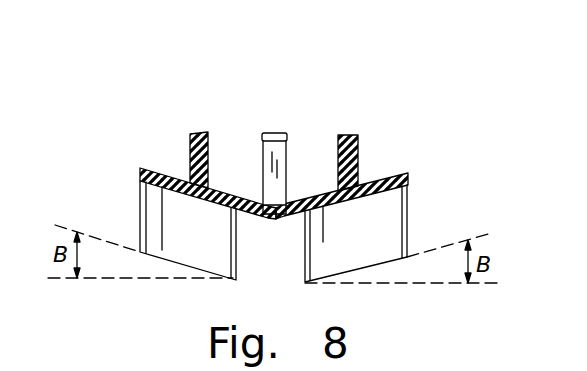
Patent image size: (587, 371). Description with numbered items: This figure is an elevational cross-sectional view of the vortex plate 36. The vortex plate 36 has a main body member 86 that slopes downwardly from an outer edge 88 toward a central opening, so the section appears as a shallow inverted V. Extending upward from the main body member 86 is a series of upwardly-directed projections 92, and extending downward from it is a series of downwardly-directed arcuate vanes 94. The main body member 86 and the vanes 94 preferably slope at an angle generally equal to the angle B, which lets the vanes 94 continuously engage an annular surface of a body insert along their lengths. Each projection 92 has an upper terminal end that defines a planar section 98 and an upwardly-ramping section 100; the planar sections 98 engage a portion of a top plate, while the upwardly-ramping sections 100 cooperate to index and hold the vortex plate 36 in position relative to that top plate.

The vortex plate 36 is at (424, 111).
The main body member 86 is at (255, 153).
The outer edge 88 is at (410, 173).
The upwardly-directed projections 92 is at (188, 163).
The downwardly-directed arcuate vanes 94 is at (163, 210).
The planar section 98 is at (201, 133).
The upwardly-ramping section 100 is at (195, 132).